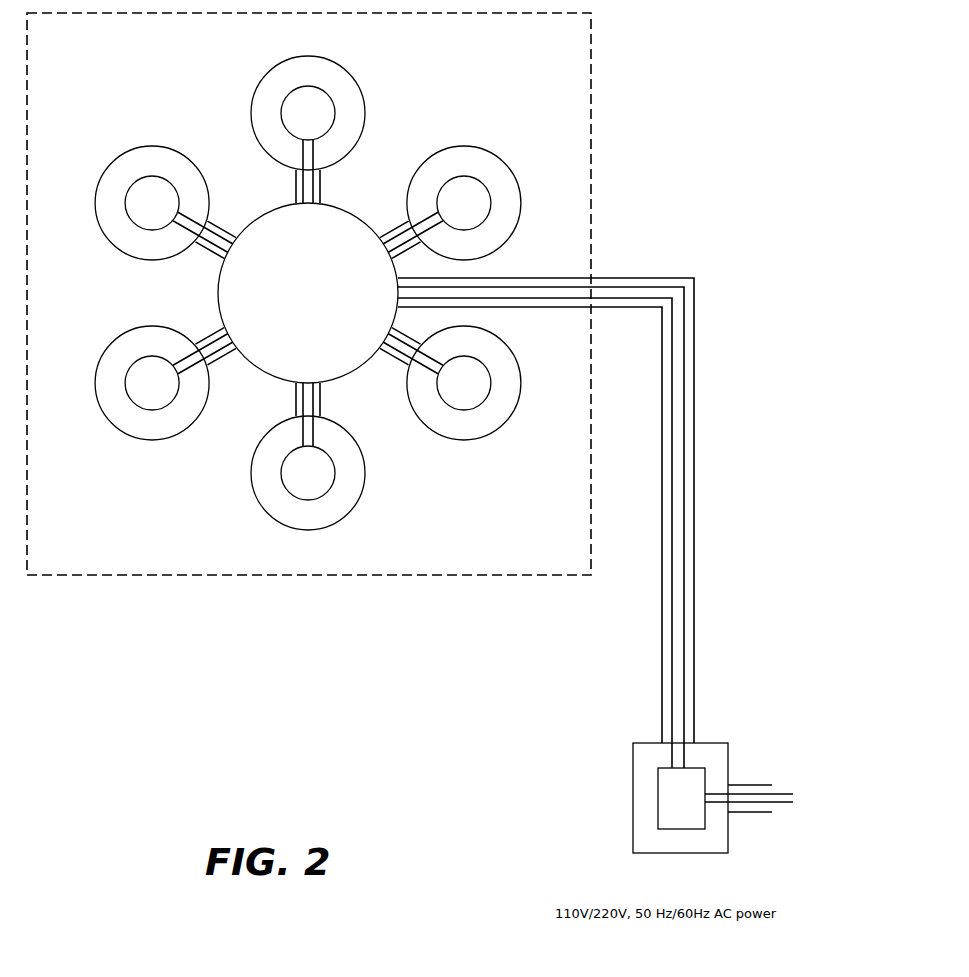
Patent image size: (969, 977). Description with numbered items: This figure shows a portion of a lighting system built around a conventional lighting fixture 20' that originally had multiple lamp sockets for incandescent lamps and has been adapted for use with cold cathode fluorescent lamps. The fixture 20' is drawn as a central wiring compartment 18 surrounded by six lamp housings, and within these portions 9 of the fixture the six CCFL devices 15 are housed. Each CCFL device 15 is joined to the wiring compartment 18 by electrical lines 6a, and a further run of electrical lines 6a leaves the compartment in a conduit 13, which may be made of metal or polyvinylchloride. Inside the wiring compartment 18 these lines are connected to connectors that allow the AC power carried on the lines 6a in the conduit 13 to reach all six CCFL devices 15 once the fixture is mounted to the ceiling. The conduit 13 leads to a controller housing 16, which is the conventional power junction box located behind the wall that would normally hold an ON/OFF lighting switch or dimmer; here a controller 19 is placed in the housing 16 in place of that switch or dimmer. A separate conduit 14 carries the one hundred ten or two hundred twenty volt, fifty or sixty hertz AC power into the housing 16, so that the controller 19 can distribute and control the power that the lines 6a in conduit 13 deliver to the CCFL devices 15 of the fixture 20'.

The portions of the conventional lighting fixture 9 is at (357, 80).
The CCFL device 15 is at (165, 180).
The wiring compartment 18 is at (343, 208).
The conventional lighting fixture 20' is at (309, 294).
The electrical lines 6a is at (205, 236).
The conduit 13 is at (660, 276).
The controller housing 16 is at (710, 742).
The conduit 14 is at (752, 783).
The controller 19 is at (658, 815).